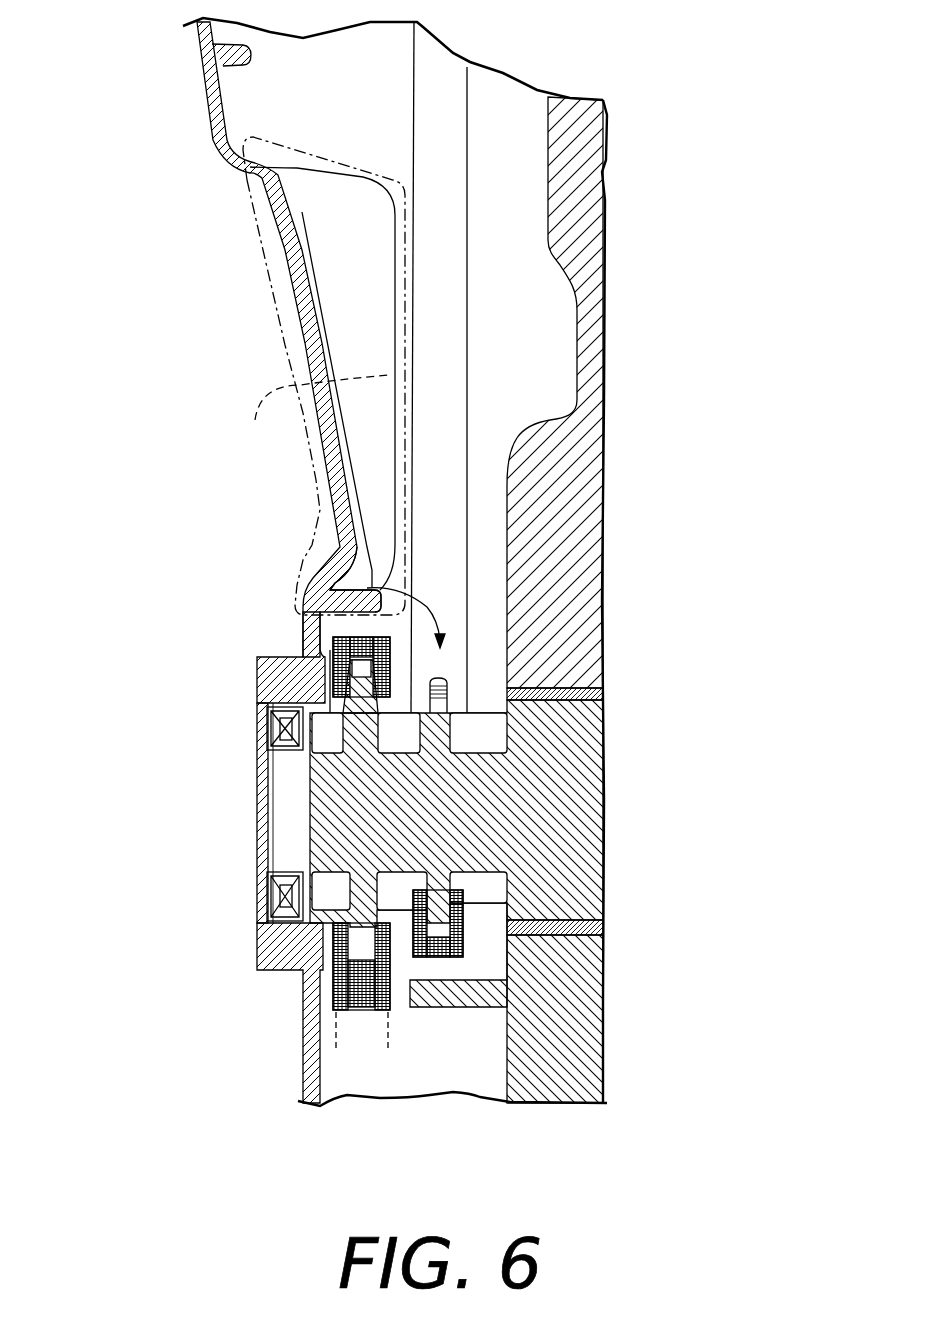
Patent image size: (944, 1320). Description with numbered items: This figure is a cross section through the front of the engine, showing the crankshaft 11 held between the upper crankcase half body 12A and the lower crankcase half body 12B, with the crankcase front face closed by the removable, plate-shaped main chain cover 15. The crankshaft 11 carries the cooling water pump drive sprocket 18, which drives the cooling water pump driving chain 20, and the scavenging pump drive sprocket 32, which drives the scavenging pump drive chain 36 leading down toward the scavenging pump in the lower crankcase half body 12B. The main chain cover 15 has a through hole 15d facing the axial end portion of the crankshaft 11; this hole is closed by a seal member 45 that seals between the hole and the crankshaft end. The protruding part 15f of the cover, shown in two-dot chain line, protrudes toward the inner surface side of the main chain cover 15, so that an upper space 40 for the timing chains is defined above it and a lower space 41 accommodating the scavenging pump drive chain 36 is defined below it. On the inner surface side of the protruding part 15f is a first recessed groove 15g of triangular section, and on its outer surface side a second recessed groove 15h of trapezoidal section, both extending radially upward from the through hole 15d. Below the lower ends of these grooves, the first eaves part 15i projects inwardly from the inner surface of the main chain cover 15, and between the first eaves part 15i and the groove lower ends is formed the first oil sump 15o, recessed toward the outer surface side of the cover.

The crankshaft 11 is at (570, 802).
The upper crankcase half body 12A is at (603, 385).
The lower crankcase half body 12B is at (605, 1002).
The main chain cover 15 is at (205, 105).
The through hole 15d is at (283, 893).
The protruding part 15f is at (275, 313).
The first recessed groove 15g is at (337, 432).
The second recessed groove 15h is at (310, 418).
The first eaves part 15i is at (365, 587).
The first oil sump 15o is at (337, 583).
The cooling water pump drive sprocket 18 is at (440, 712).
The cooling water pump driving chain 20 is at (460, 915).
The scavenging pump drive sprocket 32 is at (300, 732).
The scavenging pump drive chain 36 is at (333, 953).
The upper space 40 is at (336, 119).
The lower space 41 is at (350, 630).
The seal member 45 is at (297, 718).